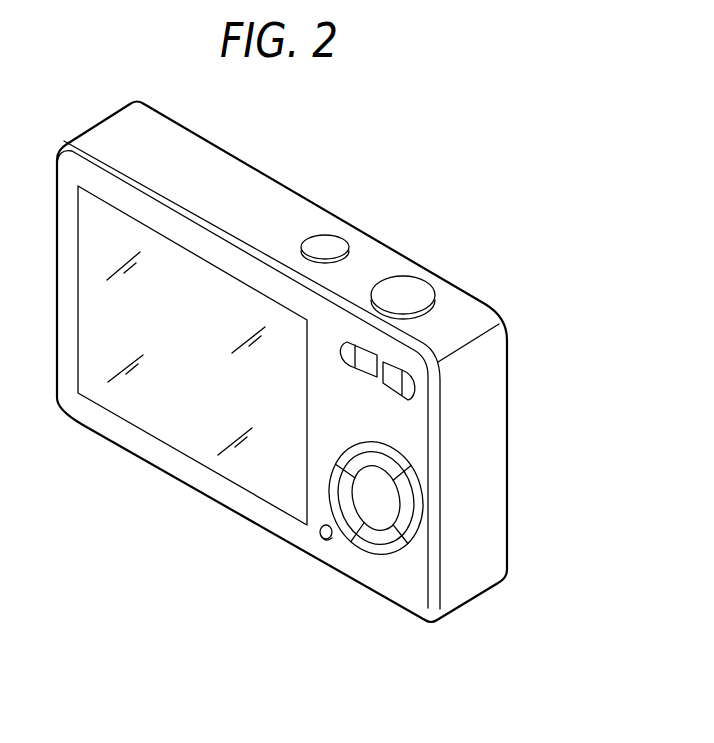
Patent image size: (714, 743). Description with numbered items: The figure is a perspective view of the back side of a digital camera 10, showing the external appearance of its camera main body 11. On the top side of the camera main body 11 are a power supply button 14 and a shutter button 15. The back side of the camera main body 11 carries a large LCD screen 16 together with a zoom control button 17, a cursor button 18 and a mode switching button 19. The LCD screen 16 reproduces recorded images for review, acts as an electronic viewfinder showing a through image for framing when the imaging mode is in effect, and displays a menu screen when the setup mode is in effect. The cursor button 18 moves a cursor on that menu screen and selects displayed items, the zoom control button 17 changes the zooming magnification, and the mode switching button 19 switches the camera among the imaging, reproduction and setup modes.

The digital camera 10 is at (532, 248).
The camera main body 11 is at (288, 186).
The power supply button 14 is at (325, 247).
The shutter button 15 is at (403, 293).
The LCD screen 16 is at (183, 400).
The zoom control button 17 is at (430, 397).
The cursor button 18 is at (357, 553).
The mode switching button 19 is at (322, 540).